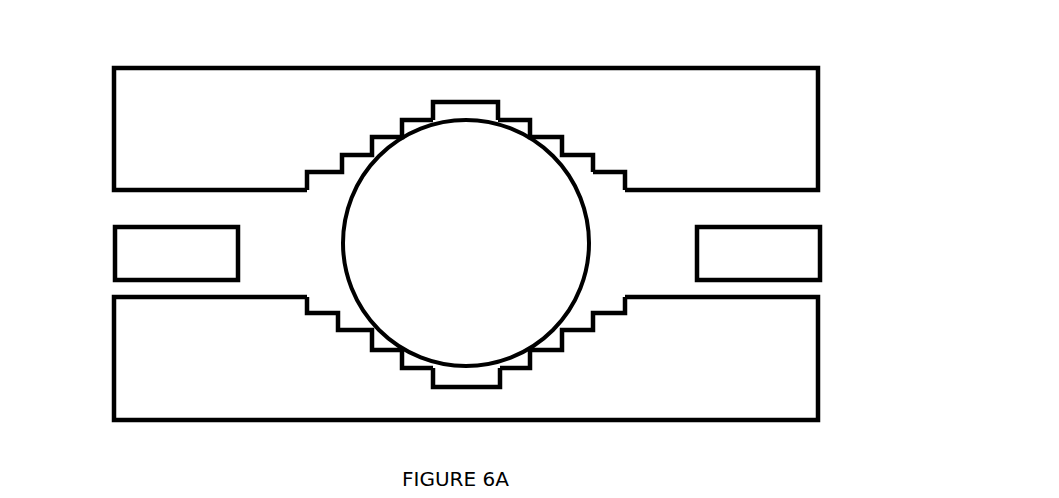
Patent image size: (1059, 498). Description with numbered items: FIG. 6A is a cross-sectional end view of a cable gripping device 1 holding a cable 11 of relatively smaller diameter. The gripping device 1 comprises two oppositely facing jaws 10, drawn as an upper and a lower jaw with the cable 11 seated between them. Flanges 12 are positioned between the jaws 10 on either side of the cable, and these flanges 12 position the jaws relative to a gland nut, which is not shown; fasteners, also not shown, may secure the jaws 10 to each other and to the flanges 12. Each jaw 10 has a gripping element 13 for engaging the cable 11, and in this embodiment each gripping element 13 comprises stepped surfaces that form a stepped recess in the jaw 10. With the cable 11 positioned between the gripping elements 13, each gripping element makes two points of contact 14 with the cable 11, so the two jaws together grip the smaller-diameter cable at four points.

The gripping device 1 is at (199, 442).
The jaw 10 is at (737, 85).
The cable 11 is at (368, 217).
The flange 12 is at (137, 245).
The gripping element 13 is at (604, 186).
The point of contact 14 is at (402, 135).